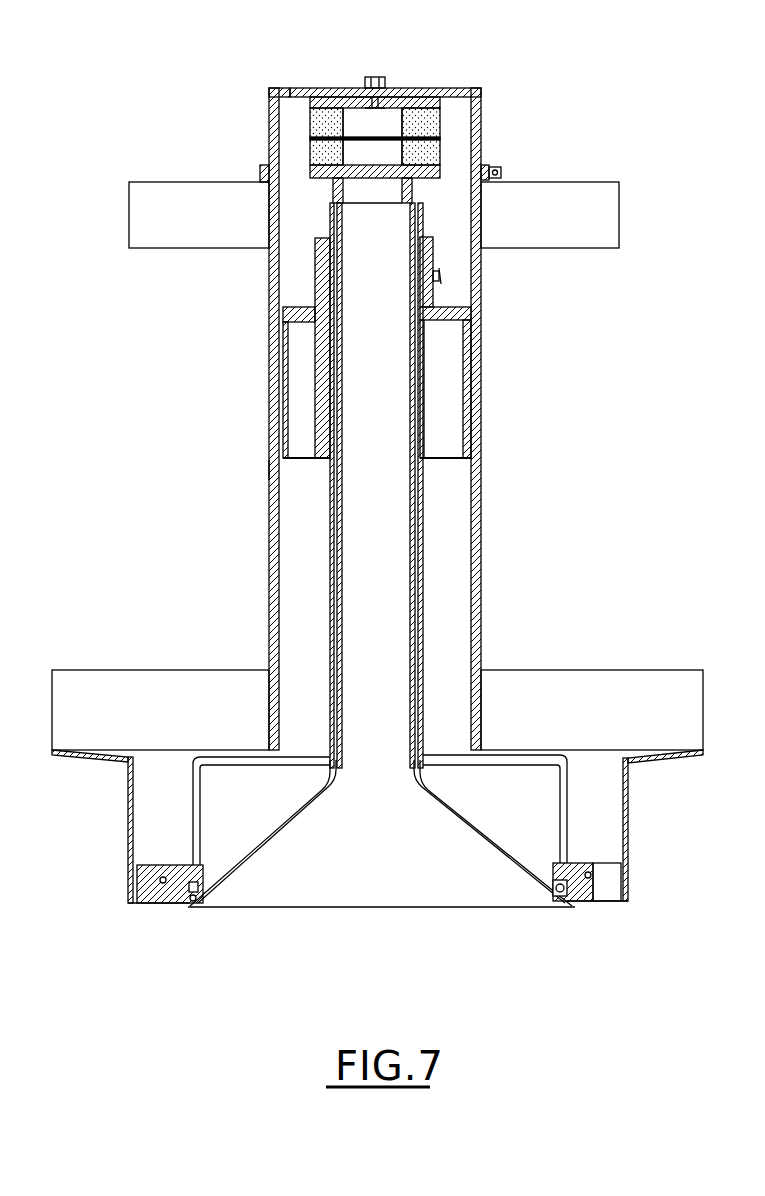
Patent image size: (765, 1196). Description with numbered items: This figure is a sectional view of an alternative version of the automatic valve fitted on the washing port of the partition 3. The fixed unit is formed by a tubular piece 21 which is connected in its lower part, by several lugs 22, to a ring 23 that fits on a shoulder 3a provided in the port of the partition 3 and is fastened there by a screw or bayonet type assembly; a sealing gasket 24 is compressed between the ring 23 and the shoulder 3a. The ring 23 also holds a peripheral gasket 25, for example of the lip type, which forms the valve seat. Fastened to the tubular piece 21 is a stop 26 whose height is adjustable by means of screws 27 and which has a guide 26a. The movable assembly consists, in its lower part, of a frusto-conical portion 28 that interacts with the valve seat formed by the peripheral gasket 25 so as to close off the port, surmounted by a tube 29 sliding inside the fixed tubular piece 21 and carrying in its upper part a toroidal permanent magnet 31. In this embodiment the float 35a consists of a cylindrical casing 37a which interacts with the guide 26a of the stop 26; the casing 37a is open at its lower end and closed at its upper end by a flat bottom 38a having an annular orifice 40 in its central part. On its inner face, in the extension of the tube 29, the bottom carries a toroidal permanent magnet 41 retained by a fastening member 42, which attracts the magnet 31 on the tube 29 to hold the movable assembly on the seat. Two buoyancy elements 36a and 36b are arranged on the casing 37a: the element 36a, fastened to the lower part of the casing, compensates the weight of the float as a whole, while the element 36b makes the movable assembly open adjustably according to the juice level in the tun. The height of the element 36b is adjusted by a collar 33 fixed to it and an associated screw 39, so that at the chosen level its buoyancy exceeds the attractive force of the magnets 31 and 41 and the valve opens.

The partition 3 is at (100, 757).
The shoulder 3a is at (140, 888).
The tubular piece 21 is at (423, 572).
The lugs 22 is at (525, 762).
The ring 23 is at (163, 865).
The sealing gasket 24 is at (590, 880).
The peripheral gasket 25 is at (200, 905).
The stop 26 is at (315, 262).
The guide 26a is at (470, 410).
The screws 27 is at (441, 276).
The frusto-conical portion 28 is at (296, 818).
The tube 29 is at (414, 525).
The toroidal permanent magnet 31 is at (318, 145).
The collar 33 is at (484, 166).
The float 35a is at (258, 467).
The buoyancy element 36a is at (112, 695).
The buoyancy element 36b is at (148, 200).
The cylindrical casing 37a is at (270, 525).
The flat bottom 38a is at (300, 88).
The screw 39 is at (502, 170).
The annular orifice 40 is at (275, 88).
The toroidal permanent magnet 41 is at (312, 118).
The fastening member 42 is at (374, 80).